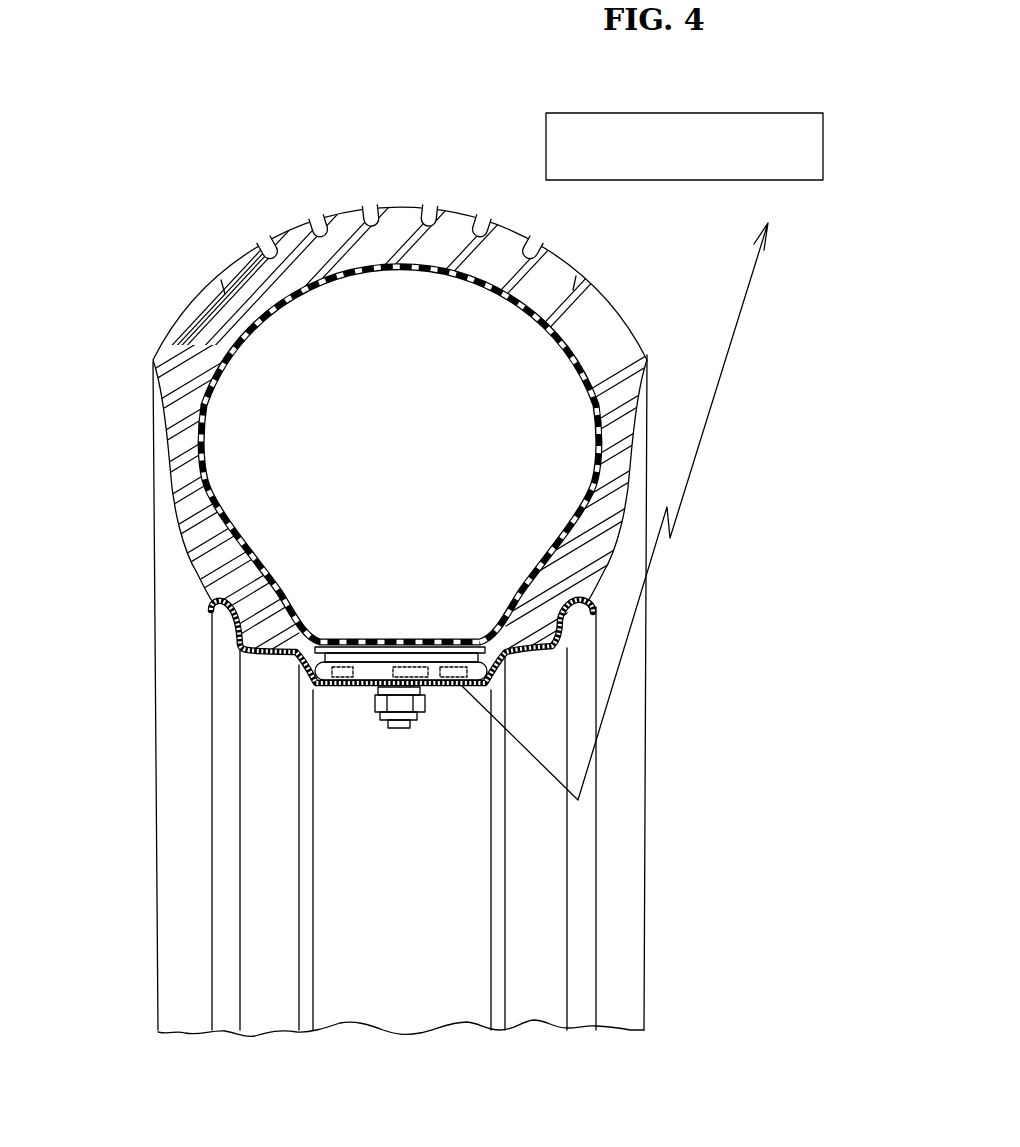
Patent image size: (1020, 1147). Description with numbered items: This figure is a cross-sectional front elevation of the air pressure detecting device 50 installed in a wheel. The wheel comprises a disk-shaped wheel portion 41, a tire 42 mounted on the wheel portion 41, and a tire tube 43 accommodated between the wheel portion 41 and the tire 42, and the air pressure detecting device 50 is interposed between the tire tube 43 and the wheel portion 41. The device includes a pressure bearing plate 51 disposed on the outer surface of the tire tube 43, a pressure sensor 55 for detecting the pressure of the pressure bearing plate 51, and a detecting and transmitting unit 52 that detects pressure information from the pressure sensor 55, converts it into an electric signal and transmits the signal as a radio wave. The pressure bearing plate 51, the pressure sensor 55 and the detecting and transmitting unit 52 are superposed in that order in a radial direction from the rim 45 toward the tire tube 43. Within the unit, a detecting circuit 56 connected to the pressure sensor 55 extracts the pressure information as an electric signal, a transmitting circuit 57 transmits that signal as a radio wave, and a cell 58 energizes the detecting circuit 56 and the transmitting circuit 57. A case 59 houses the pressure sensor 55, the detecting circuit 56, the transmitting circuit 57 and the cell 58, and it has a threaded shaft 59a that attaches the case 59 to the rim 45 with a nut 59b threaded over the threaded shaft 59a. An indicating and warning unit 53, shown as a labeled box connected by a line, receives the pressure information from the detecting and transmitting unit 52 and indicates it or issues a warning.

The wheel portion 41 is at (130, 578).
The tire 42 is at (283, 232).
The tire tube 43 is at (250, 330).
The rim 45 is at (236, 604).
The air pressure detecting device 50 is at (199, 153).
The pressure bearing plate 51 is at (480, 633).
The detecting and transmitting unit 52 is at (440, 695).
The indicating and warning unit 53 is at (683, 180).
The pressure sensor 55 is at (347, 662).
The detecting circuit 56 is at (408, 662).
The transmitting circuit 57 is at (453, 662).
The cell 58 is at (340, 687).
The case 59 is at (305, 664).
The threaded shaft 59a is at (400, 728).
The nut 59b is at (372, 703).